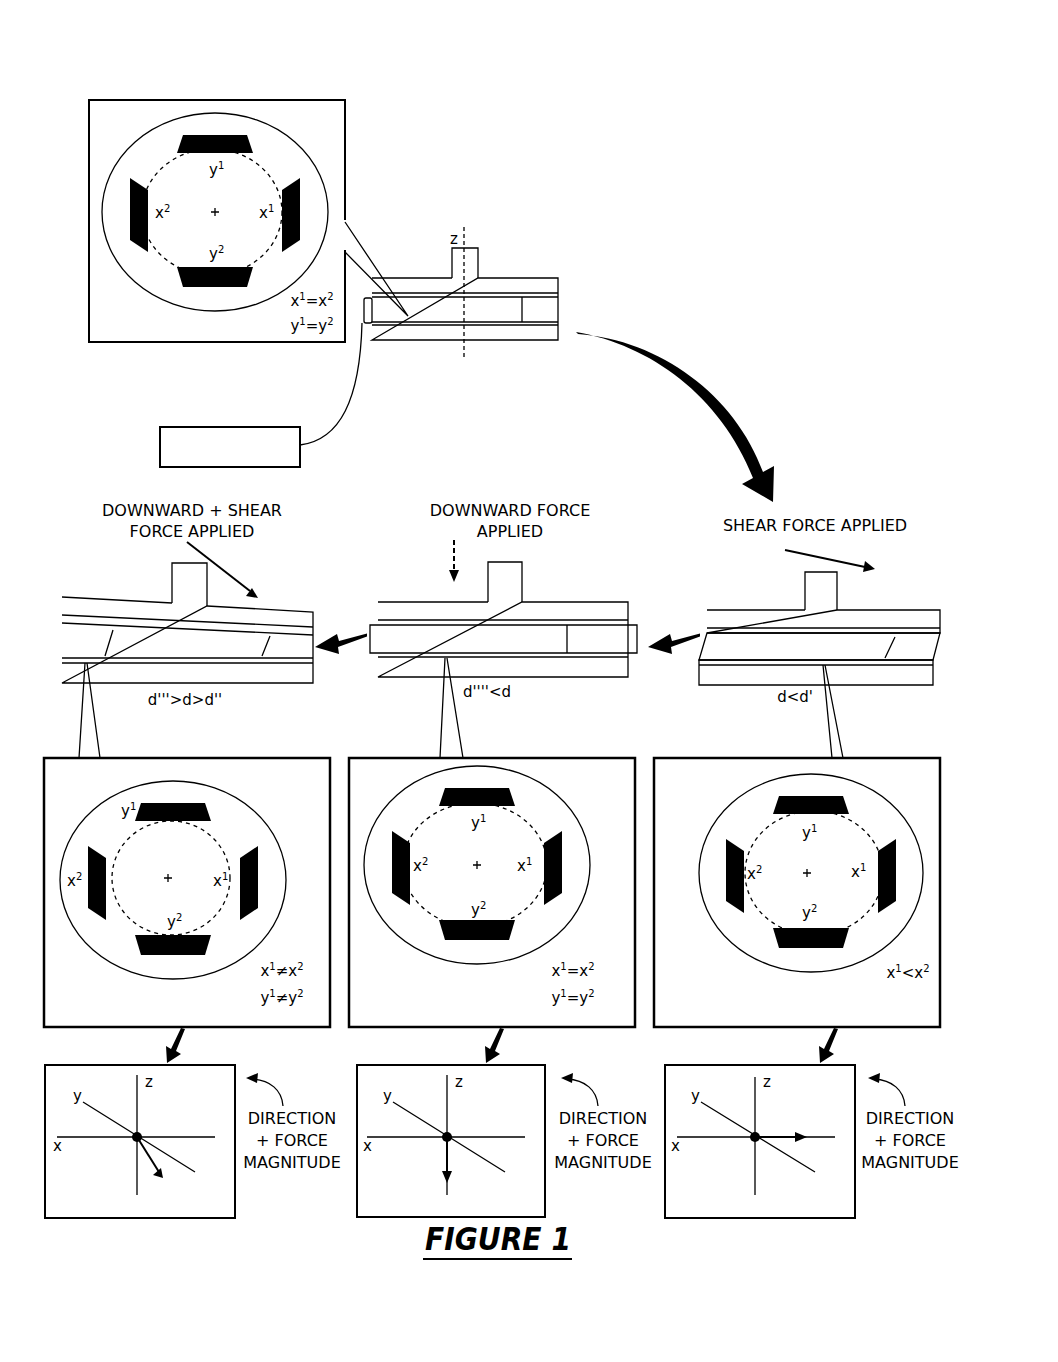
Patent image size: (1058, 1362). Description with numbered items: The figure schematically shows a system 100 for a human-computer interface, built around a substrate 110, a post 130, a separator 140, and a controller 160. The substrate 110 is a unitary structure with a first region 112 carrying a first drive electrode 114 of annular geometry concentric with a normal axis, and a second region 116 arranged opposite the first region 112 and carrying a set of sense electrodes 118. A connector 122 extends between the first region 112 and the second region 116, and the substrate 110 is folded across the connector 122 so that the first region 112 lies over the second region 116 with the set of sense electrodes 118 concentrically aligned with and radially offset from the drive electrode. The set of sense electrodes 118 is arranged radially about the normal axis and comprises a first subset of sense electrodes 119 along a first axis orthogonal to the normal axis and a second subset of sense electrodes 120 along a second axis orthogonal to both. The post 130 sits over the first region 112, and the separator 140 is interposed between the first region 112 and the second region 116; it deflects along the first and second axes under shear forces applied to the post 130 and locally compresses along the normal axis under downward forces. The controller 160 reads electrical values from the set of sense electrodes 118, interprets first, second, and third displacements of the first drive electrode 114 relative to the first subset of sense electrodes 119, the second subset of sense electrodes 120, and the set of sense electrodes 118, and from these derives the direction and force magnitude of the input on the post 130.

The system 100 is at (440, 122).
The substrate 110 is at (128, 283).
The first region 112 is at (412, 294).
The first drive electrode 114 is at (170, 153).
The second region 116 is at (405, 327).
The set of sense electrodes 118 is at (300, 170).
The first subset of sense electrodes 119 is at (215, 135).
The second subset of sense electrodes 120 is at (293, 220).
The connector 122 is at (365, 320).
The post 130 is at (472, 262).
The separator 140 is at (512, 315).
The controller 160 is at (160, 442).